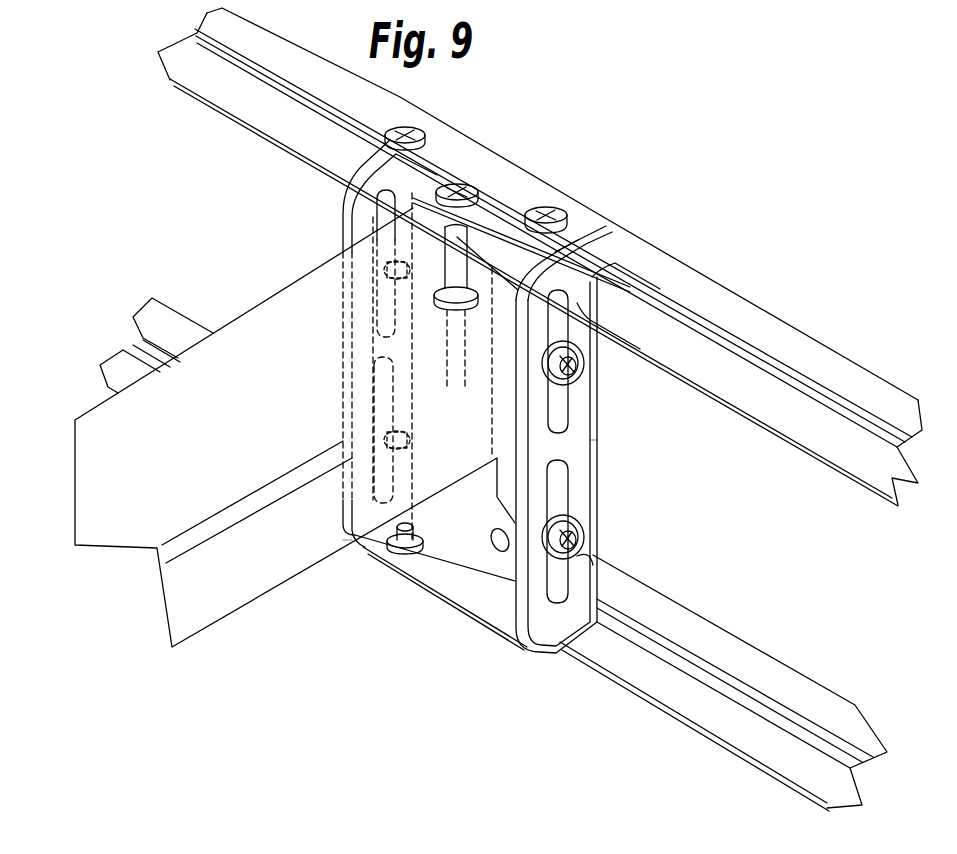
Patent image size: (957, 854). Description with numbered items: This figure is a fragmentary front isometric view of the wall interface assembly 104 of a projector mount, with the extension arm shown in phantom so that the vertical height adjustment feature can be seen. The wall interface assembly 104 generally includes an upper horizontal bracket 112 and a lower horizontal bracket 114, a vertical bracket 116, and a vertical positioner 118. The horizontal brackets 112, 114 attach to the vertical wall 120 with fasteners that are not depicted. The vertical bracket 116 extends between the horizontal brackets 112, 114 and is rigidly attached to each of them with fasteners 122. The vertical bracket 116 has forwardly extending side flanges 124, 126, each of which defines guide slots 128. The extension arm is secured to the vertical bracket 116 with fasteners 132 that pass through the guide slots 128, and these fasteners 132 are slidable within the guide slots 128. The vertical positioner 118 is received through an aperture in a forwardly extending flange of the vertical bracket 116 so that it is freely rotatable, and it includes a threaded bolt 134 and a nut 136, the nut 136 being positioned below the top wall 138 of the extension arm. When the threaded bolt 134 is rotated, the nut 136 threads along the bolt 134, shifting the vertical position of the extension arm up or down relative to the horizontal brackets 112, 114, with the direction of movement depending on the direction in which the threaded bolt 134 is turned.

The wall interface assembly 104 is at (693, 282).
The horizontal bracket 112 is at (757, 317).
The horizontal bracket 114 is at (643, 592).
The vertical bracket 116 is at (597, 452).
The vertical positioner 118 is at (458, 188).
The vertical wall 120 is at (357, 639).
The fastener 122 is at (423, 132).
The side flange 124 is at (347, 221).
The side flange 126 is at (585, 503).
The guide slot 128 is at (375, 207).
The fastener 132 is at (392, 273).
The threaded bolt 134 is at (458, 237).
The nut 136 is at (590, 234).
The top wall 138 is at (267, 337).